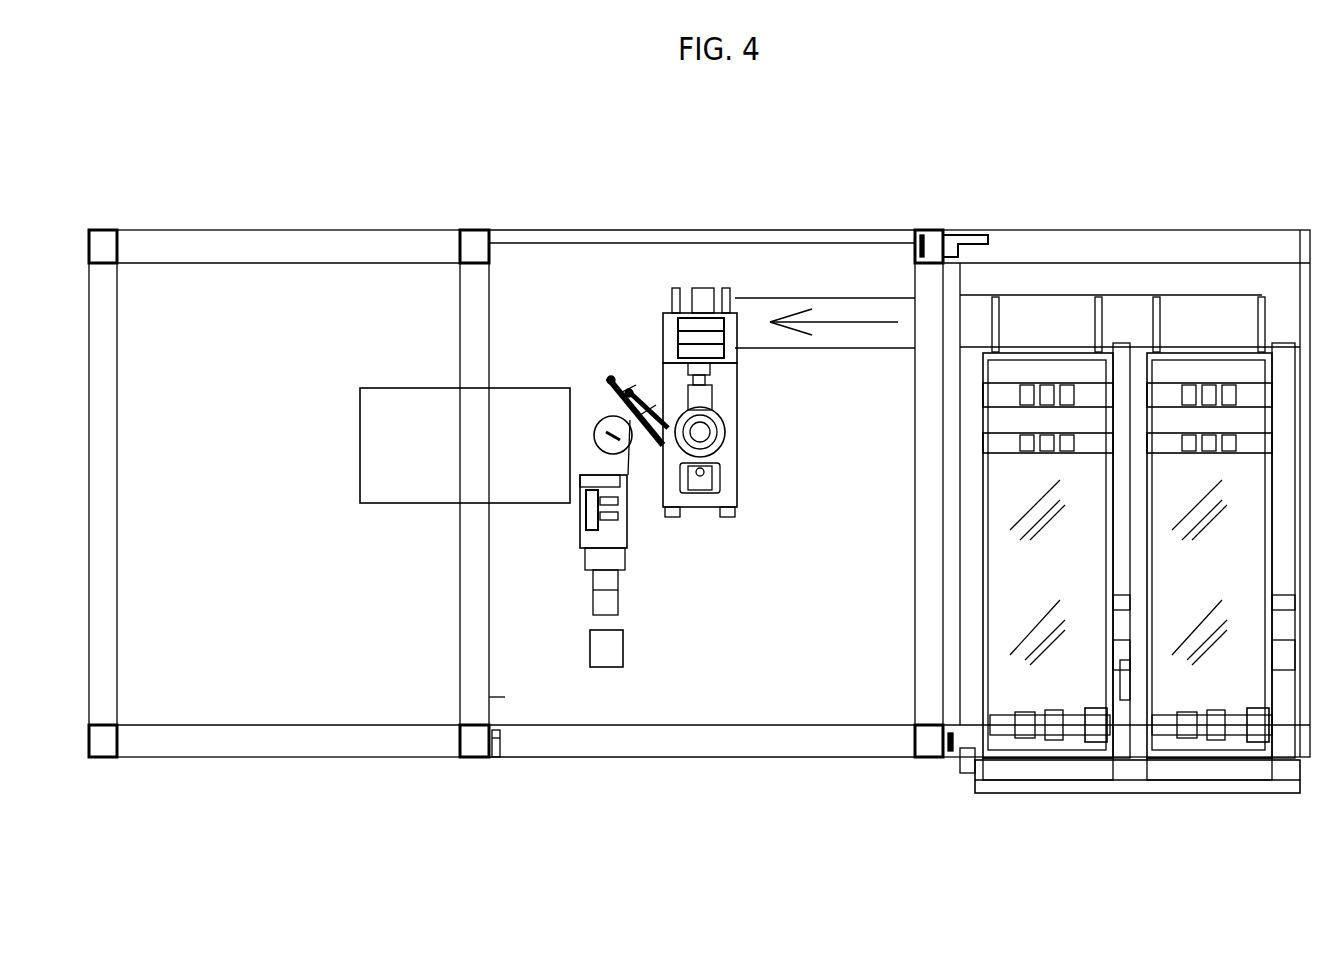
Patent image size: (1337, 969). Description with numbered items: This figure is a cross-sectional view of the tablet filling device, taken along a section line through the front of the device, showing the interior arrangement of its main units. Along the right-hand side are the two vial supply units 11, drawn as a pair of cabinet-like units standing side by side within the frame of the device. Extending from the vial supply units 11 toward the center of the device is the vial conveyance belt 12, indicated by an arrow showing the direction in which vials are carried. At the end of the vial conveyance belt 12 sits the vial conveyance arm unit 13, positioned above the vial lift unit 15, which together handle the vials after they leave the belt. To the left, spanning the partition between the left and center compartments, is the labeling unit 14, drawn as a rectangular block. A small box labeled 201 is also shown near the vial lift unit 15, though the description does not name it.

The vial supply unit 11 is at (1127, 812).
The vial conveyance belt 12 is at (880, 297).
The vial conveyance arm unit 13 is at (747, 412).
The labeling unit 14 is at (408, 388).
The vial lift unit 15 is at (684, 558).
The control box 201 is at (620, 652).